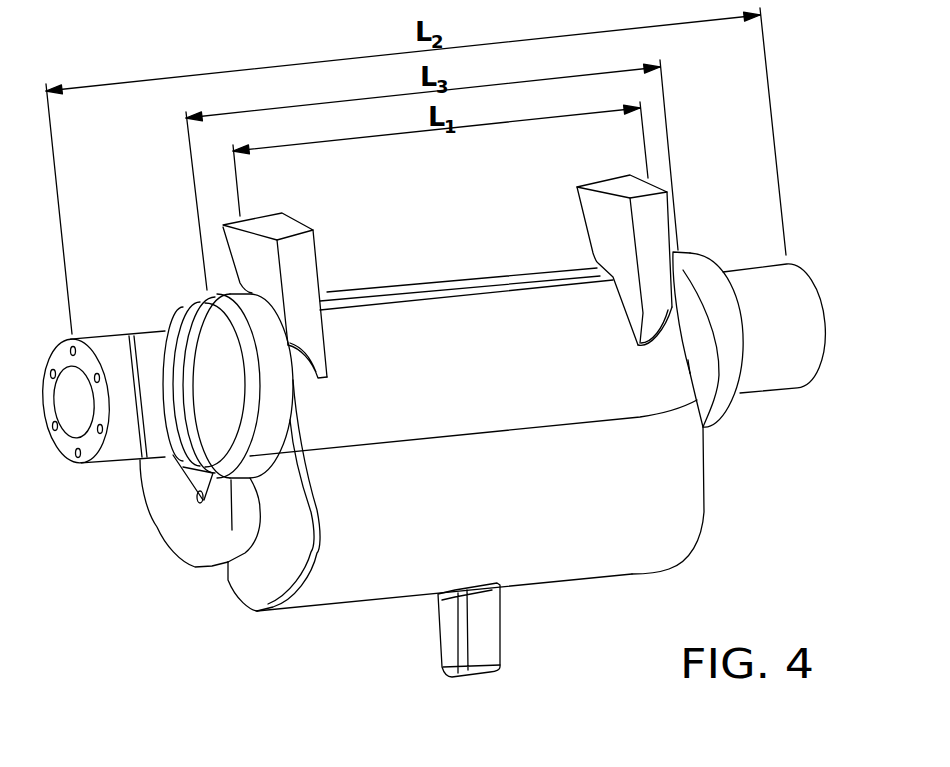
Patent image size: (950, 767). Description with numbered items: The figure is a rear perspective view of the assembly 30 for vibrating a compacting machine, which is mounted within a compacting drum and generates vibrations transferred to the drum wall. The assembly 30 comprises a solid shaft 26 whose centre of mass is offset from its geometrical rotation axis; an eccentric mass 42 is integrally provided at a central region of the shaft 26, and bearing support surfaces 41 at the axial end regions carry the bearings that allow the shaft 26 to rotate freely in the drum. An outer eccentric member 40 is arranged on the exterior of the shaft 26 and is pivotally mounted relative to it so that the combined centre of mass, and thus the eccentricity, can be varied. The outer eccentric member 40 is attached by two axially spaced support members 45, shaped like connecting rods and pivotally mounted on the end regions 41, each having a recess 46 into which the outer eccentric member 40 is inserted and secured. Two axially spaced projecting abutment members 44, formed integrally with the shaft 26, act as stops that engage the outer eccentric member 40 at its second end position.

The shaft 26 is at (492, 346).
The assembly for vibrating the compacting machine 30 is at (772, 574).
The outer eccentric member 40 is at (200, 475).
The bearing support surfaces 41 is at (150, 352).
The eccentric mass 42 is at (393, 529).
The projecting abutment members 44 is at (303, 260).
The support members 45 is at (712, 350).
The recess 46 is at (177, 483).